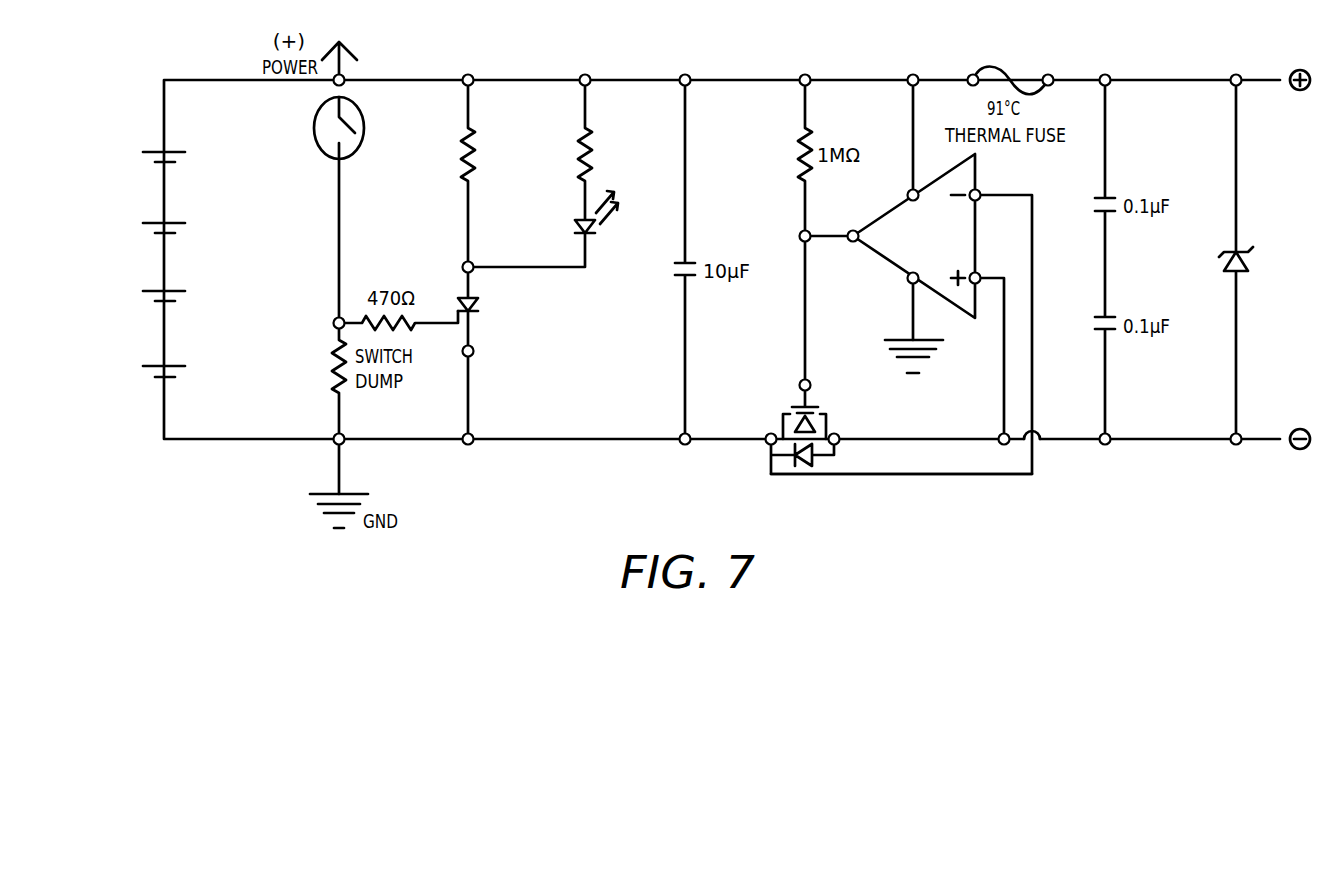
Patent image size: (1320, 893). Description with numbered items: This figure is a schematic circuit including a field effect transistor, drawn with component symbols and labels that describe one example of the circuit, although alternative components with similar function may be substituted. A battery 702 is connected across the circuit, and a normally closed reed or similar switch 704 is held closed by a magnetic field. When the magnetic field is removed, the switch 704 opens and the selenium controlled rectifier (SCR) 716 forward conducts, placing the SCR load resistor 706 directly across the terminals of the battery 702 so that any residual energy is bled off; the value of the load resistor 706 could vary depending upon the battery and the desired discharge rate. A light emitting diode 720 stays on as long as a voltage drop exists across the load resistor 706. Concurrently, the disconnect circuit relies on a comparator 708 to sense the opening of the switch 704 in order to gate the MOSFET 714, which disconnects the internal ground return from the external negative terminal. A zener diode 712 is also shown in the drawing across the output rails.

The battery 702 is at (142, 123).
The normally closed reed switch 704 is at (362, 111).
The SCR load resistor 706 is at (462, 152).
The comparator 708 is at (943, 172).
The zener diode SB540 712 is at (1245, 268).
The MOSFET 714 is at (760, 456).
The selenium controlled rectifier (SCR) 716 is at (461, 298).
The light emitting diode 720 is at (578, 230).